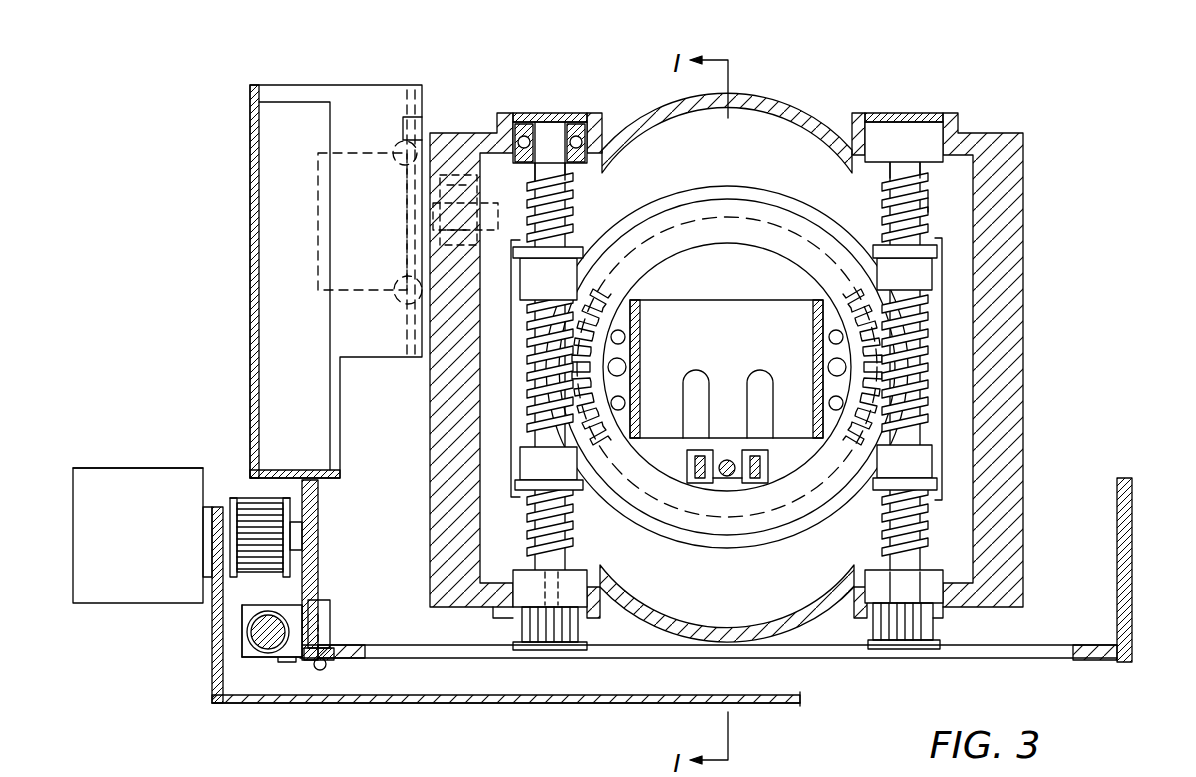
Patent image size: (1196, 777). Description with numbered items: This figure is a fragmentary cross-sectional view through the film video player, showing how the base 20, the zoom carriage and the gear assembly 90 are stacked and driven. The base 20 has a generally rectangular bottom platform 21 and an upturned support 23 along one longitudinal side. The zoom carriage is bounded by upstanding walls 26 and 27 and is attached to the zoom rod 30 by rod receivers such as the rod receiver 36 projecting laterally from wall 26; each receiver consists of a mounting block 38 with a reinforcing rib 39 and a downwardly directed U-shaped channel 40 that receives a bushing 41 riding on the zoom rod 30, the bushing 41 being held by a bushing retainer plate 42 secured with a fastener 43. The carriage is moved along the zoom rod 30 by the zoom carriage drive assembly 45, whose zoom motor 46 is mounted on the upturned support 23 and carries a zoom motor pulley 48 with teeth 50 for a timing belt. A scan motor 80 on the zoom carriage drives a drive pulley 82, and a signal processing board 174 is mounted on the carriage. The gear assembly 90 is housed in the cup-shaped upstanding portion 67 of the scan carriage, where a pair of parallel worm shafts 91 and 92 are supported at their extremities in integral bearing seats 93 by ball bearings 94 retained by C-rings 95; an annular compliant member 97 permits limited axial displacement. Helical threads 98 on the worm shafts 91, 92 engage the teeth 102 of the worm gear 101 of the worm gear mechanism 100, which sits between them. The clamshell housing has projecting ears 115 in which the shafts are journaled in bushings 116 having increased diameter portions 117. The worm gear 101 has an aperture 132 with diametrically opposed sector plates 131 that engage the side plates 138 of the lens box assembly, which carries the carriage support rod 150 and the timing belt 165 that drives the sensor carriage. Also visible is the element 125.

The base 20 is at (607, 706).
The bottom platform 21 is at (448, 704).
The upturned support 23 is at (216, 668).
The upstanding wall 26 is at (318, 506).
The upstanding wall 27 is at (1132, 556).
The zoom rod 30 is at (266, 636).
The rod receiver 36 is at (240, 628).
The mounting block 38 is at (300, 650).
The reinforcing rib 39 is at (270, 600).
The U-shaped channel 40 is at (286, 650).
The bushing 41 is at (250, 646).
The bushing retainer plate 42 is at (330, 660).
The fastener 43 is at (326, 668).
The zoom carriage drive assembly 45 is at (118, 466).
The zoom motor 46 is at (128, 584).
The zoom motor pulley 48 is at (245, 560).
The teeth 50 is at (250, 496).
The cup-shaped upstanding portion 67 is at (748, 100).
The scan motor 80 is at (350, 150).
The drive pulley 82 is at (452, 168).
The gear assembly 90 is at (935, 205).
The worm shaft 91 is at (896, 178).
The worm shaft 92 is at (553, 183).
The bearing seat 93 is at (554, 120).
The ball bearings 94 is at (575, 118).
The C-ring 95 is at (576, 160).
The annular compliant member 97 is at (536, 114).
The helical threads 98 is at (540, 352).
The worm gear mechanism 100 is at (768, 185).
The worm gear 101 is at (724, 232).
The teeth 102 is at (890, 336).
The projecting ears 115 is at (540, 448).
The bushings 116 is at (550, 276).
The increased diameter portion 117 is at (540, 250).
The drive coupling 125 is at (550, 650).
The sector plates 131 is at (620, 352).
The aperture 132 is at (800, 262).
The side plates 138 is at (817, 348).
The carriage support rod 150 is at (728, 478).
The timing belt 165 is at (693, 470).
The signal processing board 174 is at (286, 118).